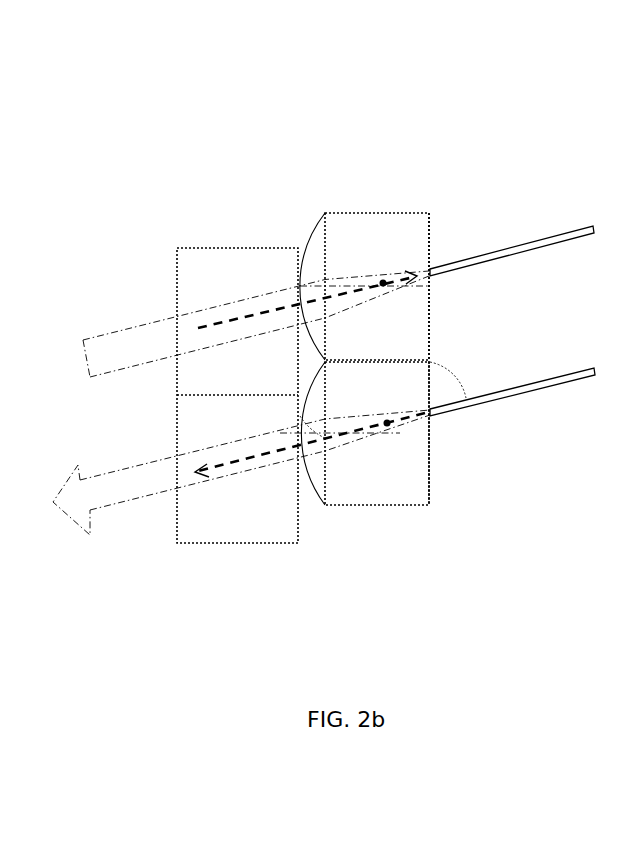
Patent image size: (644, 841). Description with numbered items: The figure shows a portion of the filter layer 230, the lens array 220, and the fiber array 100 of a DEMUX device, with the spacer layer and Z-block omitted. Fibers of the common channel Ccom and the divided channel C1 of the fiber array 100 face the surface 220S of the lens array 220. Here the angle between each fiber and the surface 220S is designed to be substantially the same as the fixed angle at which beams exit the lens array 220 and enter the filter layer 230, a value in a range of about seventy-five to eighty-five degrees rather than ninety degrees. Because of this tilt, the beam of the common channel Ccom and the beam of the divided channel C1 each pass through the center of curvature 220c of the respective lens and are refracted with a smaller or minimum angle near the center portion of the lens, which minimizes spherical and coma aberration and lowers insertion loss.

The fiber array 100 is at (505, 176).
The filter layer 230 is at (235, 230).
The lens array 220 is at (371, 206).
The center of curvature 220c is at (377, 270).
The surface of the lens array 220S is at (433, 320).
The divided channel C1 is at (570, 228).
The common channel Ccom is at (563, 370).